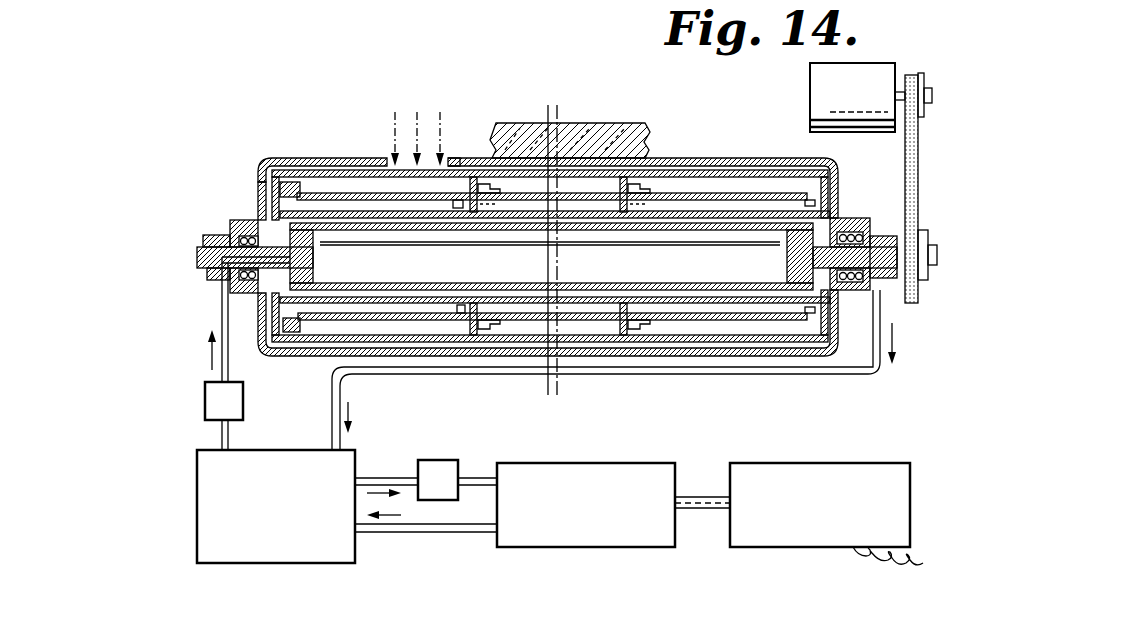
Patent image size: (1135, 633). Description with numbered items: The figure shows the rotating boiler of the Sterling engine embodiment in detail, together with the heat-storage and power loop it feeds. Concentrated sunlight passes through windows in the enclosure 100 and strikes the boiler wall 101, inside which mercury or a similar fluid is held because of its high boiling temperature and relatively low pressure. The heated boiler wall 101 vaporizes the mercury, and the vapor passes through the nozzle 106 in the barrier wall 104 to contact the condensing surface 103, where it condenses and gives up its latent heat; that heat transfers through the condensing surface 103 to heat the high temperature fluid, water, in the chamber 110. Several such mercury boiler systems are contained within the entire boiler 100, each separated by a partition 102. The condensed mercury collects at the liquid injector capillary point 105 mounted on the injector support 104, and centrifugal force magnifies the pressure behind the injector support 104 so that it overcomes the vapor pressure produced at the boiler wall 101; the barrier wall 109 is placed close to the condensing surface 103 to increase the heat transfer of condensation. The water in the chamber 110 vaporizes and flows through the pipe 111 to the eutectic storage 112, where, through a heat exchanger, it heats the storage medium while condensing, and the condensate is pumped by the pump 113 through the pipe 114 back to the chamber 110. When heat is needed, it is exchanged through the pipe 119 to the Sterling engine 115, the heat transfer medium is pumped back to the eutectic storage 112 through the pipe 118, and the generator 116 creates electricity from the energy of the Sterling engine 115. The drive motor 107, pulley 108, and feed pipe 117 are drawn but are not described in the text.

The enclosure 100 is at (328, 146).
The boiler wall 101 is at (463, 160).
The partition 102 is at (493, 165).
The condensing surface 103 is at (372, 188).
The barrier wall 104 is at (258, 176).
The liquid injector capillary point 105 is at (285, 184).
The nozzle 106 is at (457, 209).
The motor 107 is at (862, 75).
The pulley 108 is at (905, 161).
The barrier wall 109 is at (672, 195).
The chamber 110 is at (740, 211).
The pipe 111 is at (876, 335).
The eutectic storage 112 is at (345, 546).
The pump 113 is at (243, 410).
The pipe 114 is at (232, 362).
The Sterling engine 115 is at (630, 468).
The generator 116 is at (860, 470).
The feed pipe 117 is at (385, 477).
The pipe 118 is at (478, 533).
The pipe 119 is at (448, 461).